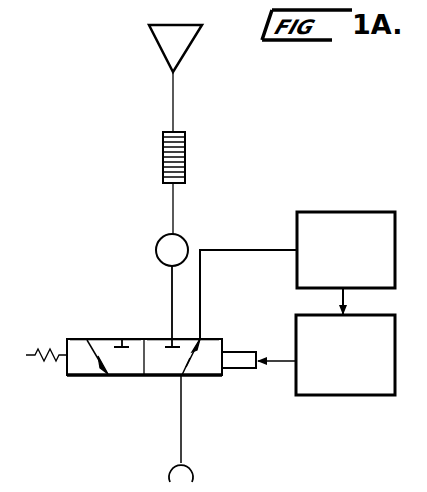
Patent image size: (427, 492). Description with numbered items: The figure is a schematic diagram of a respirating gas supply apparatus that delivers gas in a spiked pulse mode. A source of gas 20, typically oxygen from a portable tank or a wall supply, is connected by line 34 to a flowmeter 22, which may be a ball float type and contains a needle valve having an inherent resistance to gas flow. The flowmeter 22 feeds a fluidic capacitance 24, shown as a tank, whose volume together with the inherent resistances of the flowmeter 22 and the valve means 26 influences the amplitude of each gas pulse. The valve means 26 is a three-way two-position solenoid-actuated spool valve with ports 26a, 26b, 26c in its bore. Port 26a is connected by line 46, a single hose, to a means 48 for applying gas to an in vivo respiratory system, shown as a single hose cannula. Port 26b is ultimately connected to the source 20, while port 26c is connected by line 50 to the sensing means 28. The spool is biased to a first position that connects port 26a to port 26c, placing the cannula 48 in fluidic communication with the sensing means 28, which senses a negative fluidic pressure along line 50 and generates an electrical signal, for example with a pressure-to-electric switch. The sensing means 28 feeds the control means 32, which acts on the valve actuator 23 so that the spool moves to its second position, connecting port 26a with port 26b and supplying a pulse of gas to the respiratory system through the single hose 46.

The source of gas 20 is at (198, 40).
The line 34 is at (174, 90).
The flowmeter 22 is at (186, 147).
The fluidic capacitance 24 is at (160, 241).
The line 50 is at (224, 250).
The sensing means 28 is at (327, 212).
The control means 32 is at (328, 396).
The valve actuator 23 is at (278, 363).
The valve means 26 is at (83, 377).
The port 26a is at (108, 377).
The port 26b is at (87, 340).
The port 26c is at (120, 340).
The line 46 is at (181, 432).
The means for applying gas to an in vivo respiratory system 48 is at (193, 475).